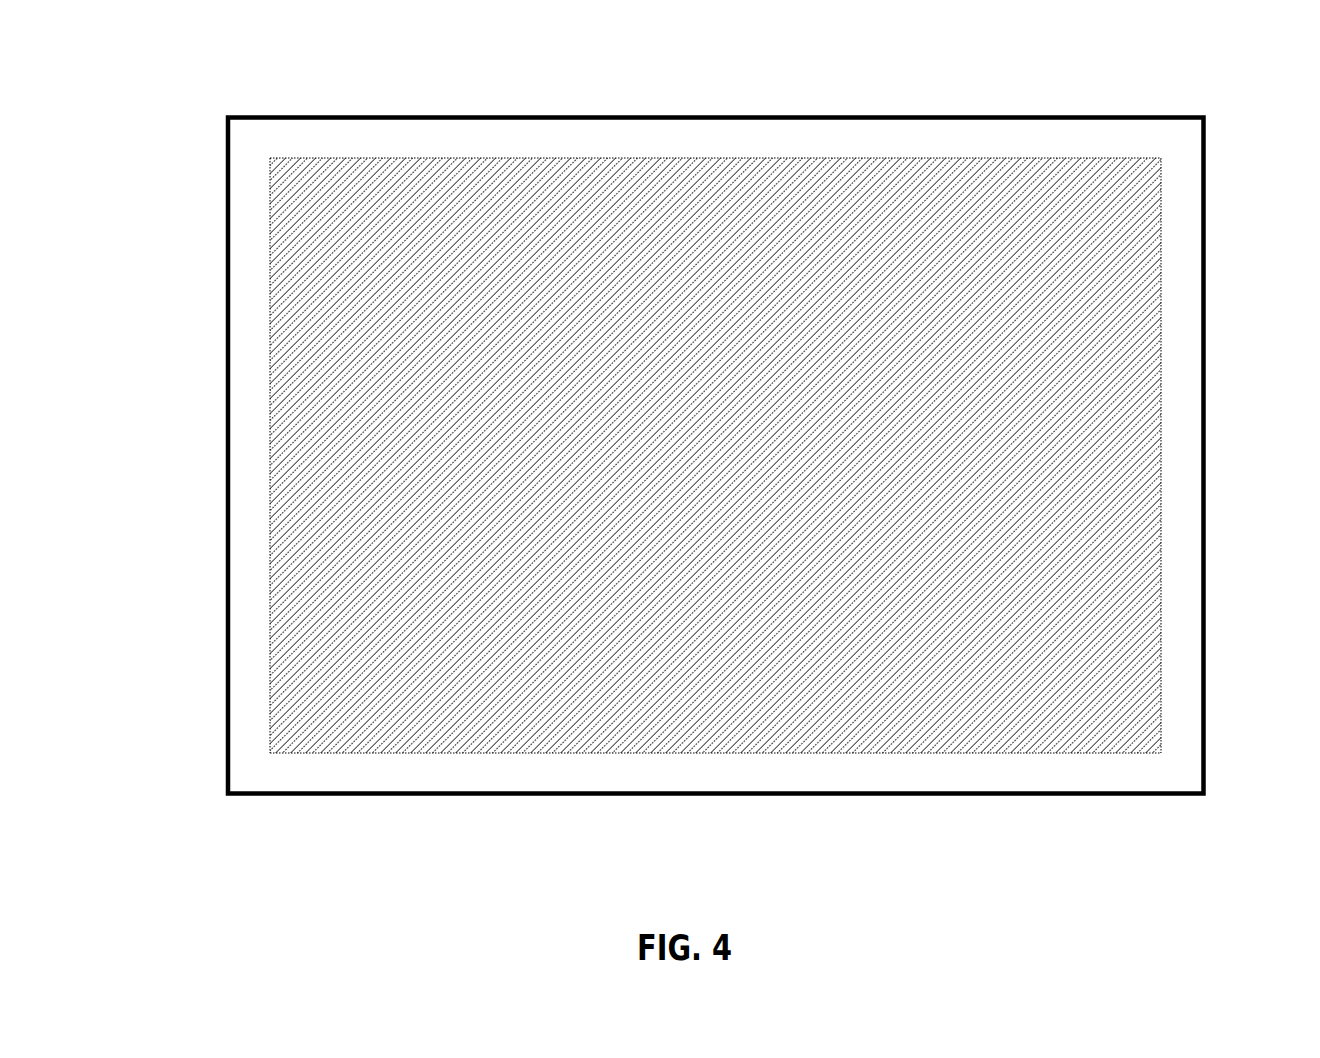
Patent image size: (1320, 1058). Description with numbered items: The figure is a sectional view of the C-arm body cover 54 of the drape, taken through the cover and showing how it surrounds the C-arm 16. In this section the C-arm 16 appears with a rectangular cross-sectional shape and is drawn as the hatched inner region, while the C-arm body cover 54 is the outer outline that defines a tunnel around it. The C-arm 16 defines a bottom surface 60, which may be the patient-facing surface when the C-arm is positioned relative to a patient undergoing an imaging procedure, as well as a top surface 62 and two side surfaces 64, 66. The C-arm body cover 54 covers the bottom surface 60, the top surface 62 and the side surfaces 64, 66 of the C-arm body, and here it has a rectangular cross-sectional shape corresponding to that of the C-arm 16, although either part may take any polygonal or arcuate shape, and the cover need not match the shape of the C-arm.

The C-arm 16 is at (475, 315).
The C-arm body cover 54 is at (1205, 230).
The bottom surface 60 is at (755, 758).
The top surface 62 is at (897, 160).
The side surface 64 is at (1162, 485).
The side surface 66 is at (272, 582).